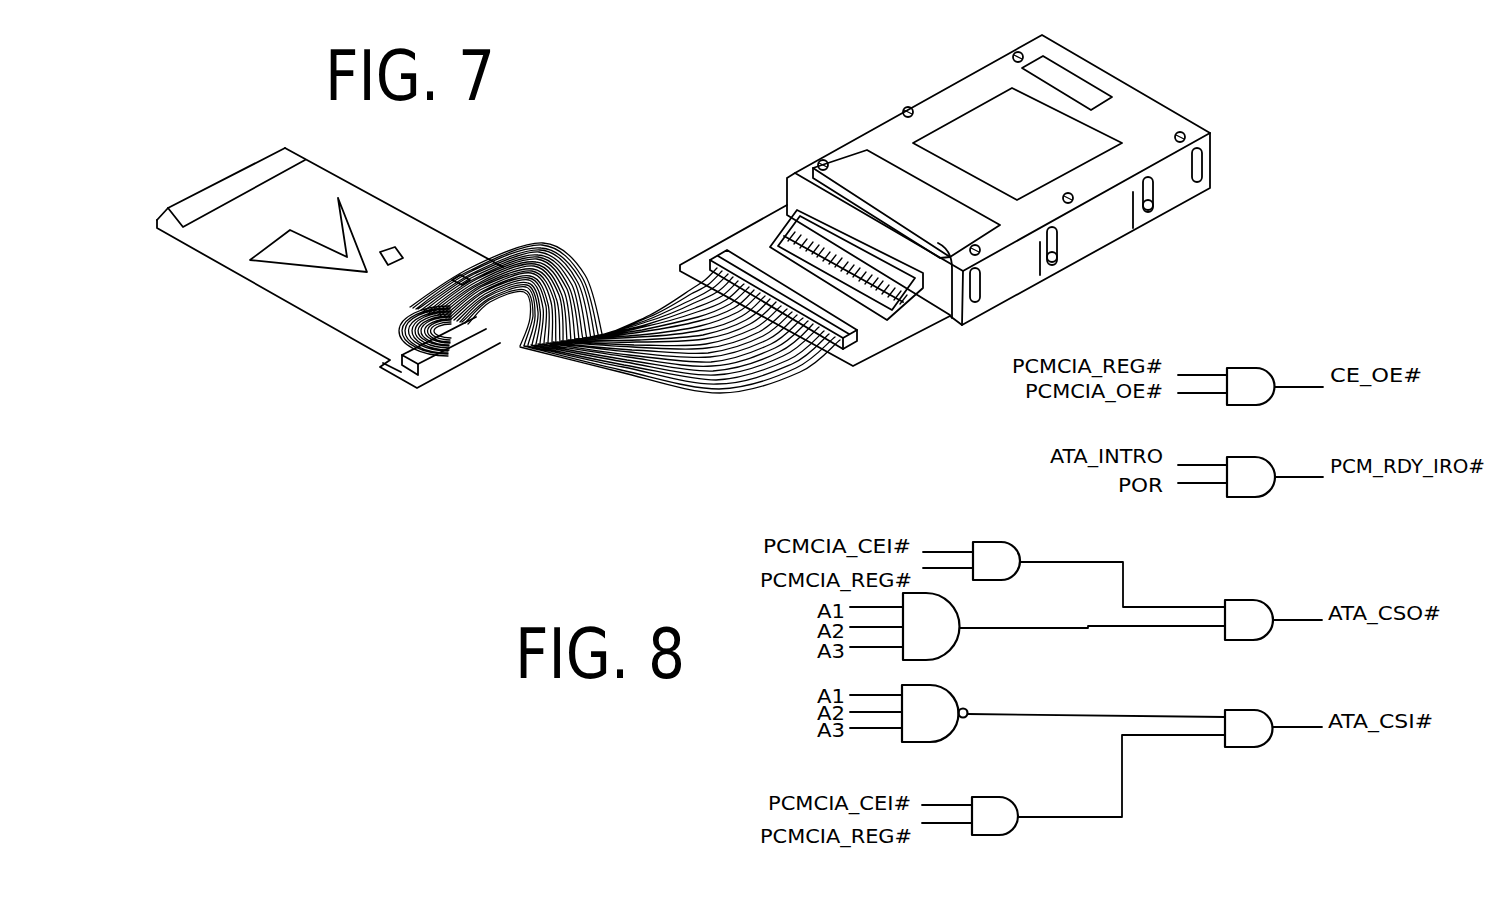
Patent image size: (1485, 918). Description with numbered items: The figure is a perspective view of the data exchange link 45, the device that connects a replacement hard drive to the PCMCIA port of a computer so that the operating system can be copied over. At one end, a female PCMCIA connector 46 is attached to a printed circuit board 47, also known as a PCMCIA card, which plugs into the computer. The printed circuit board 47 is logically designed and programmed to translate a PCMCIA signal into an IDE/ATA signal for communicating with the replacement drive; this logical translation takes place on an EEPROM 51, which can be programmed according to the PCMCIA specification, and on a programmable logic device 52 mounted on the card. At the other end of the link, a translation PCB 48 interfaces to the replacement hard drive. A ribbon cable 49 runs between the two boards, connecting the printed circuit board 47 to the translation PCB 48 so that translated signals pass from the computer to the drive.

The data exchange link 45 is at (646, 152).
The female PCMCIA connector 46 is at (285, 131).
The printed circuit board 47 is at (337, 194).
The translation PCB 48 is at (723, 232).
The ribbon cable 49 is at (718, 396).
The EEPROM 51 is at (459, 273).
The programmable logic device 52 is at (404, 305).